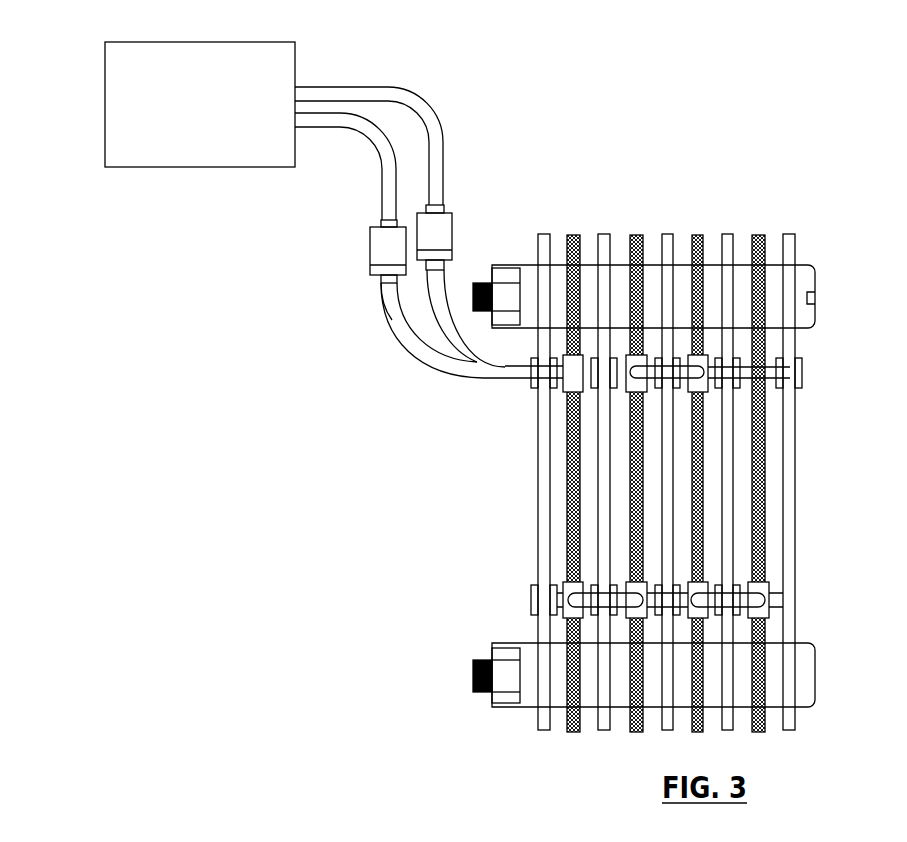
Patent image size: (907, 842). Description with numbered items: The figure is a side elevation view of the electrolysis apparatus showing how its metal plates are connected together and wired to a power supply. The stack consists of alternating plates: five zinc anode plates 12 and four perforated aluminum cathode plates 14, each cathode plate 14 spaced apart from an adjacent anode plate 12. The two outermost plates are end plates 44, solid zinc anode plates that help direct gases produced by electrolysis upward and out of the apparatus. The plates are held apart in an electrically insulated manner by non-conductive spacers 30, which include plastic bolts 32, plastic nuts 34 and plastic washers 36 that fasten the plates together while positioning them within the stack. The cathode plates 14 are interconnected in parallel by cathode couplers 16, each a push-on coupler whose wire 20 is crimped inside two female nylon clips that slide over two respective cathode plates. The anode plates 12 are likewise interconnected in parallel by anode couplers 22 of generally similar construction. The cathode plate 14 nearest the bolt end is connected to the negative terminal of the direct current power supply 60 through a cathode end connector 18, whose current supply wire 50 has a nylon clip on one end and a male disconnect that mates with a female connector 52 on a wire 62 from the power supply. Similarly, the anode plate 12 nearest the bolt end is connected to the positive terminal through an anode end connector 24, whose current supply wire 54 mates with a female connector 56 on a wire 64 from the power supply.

The anode plate 12 is at (667, 732).
The cathode plate 14 is at (760, 235).
The cathode coupler 16 is at (703, 390).
The cathode end connector 18 is at (446, 274).
The wire 20 is at (652, 378).
The anode coupler 22 is at (535, 602).
The anode end connector 24 is at (383, 290).
The non-conductive spacer 30 is at (446, 510).
The plastic bolt 32 is at (478, 700).
The plastic nut 34 is at (503, 703).
The plastic washer 36 is at (530, 648).
The end plate 44 is at (538, 440).
The current supply wire 50 is at (478, 353).
The female connector 52 is at (452, 221).
The current supply wire 54 is at (405, 330).
The female connector 56 is at (382, 248).
The direct current power supply 60 is at (105, 141).
The wire 62 is at (443, 128).
The wire 64 is at (367, 138).